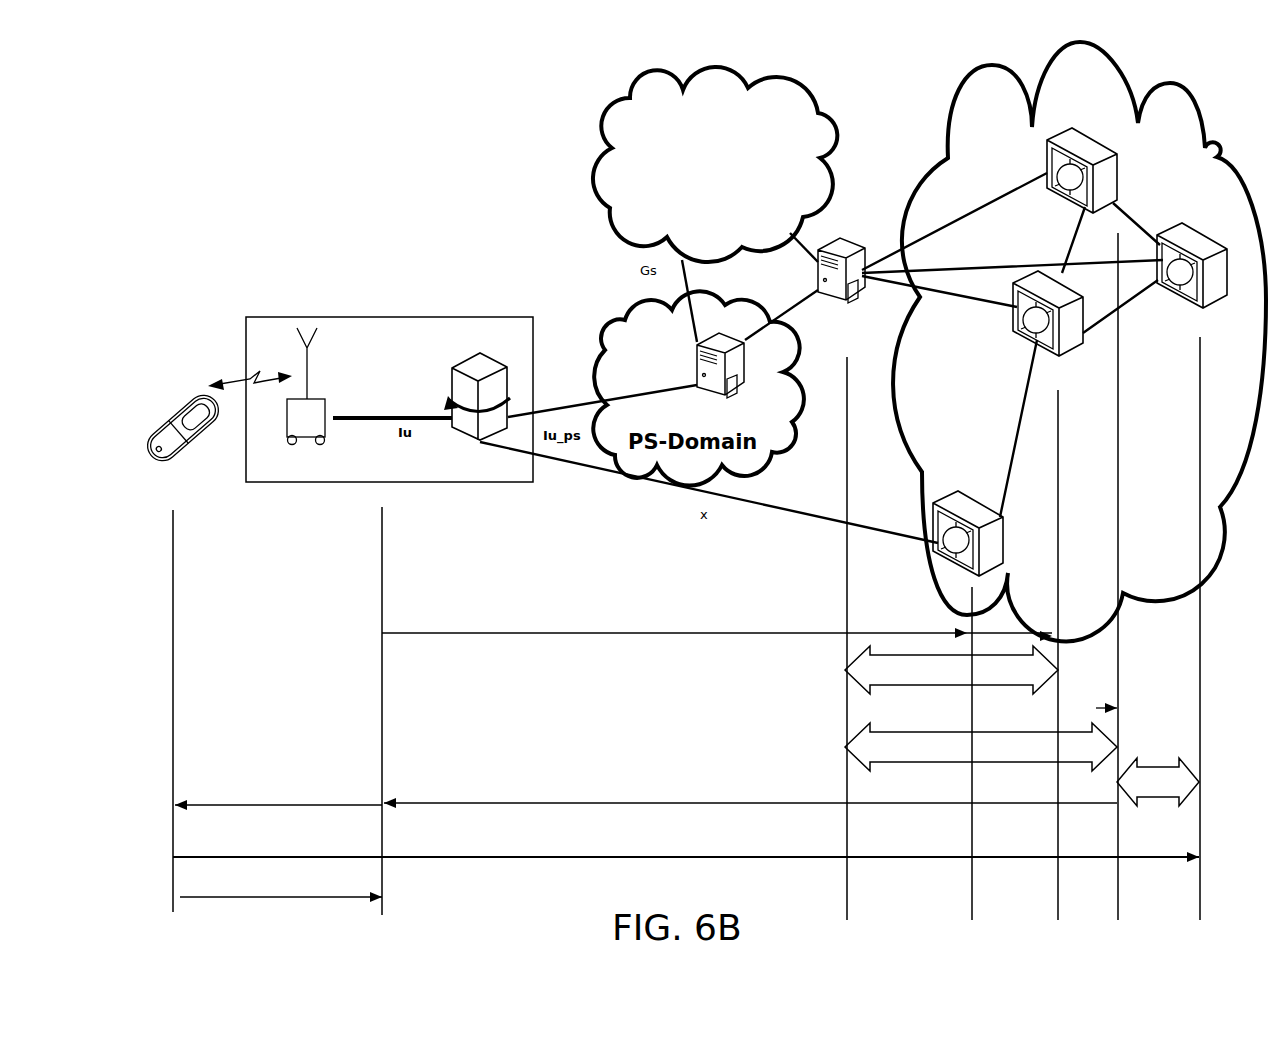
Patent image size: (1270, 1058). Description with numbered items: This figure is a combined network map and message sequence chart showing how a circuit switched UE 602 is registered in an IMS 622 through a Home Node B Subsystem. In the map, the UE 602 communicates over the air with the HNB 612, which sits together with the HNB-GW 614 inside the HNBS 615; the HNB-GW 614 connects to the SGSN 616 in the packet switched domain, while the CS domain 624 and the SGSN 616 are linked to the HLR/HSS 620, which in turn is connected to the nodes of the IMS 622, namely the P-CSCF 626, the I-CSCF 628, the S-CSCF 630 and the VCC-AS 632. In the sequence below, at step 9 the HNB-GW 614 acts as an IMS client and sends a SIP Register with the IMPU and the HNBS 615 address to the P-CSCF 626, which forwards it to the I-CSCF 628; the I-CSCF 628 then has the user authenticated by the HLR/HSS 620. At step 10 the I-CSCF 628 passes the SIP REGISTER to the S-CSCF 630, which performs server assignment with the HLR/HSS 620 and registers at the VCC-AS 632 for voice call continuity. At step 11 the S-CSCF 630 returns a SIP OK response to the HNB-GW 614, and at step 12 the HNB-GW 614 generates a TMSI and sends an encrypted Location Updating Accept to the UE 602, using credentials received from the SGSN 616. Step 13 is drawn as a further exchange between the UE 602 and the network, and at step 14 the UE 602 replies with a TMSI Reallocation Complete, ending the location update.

The UE 602 is at (160, 460).
The HNB 612 is at (308, 403).
The HNB-GW 614 is at (477, 375).
The HNBS 615 is at (423, 485).
The SGSN 616 is at (770, 357).
The HLR/HSS 620 is at (850, 235).
The IMS 622 is at (1172, 107).
The CS domain 624 is at (808, 102).
The P-CSCF 626 is at (933, 557).
The I-CSCF 628 is at (1025, 335).
The S-CSCF 630 is at (1058, 195).
The VCC-AS 632 is at (1200, 237).
The Step 9 is at (720, 654).
The Step 10 is at (1022, 748).
The Step 11 is at (750, 803).
The Step 12 is at (278, 805).
The step 13 signaling 13 is at (686, 857).
The Step 14 is at (281, 897).